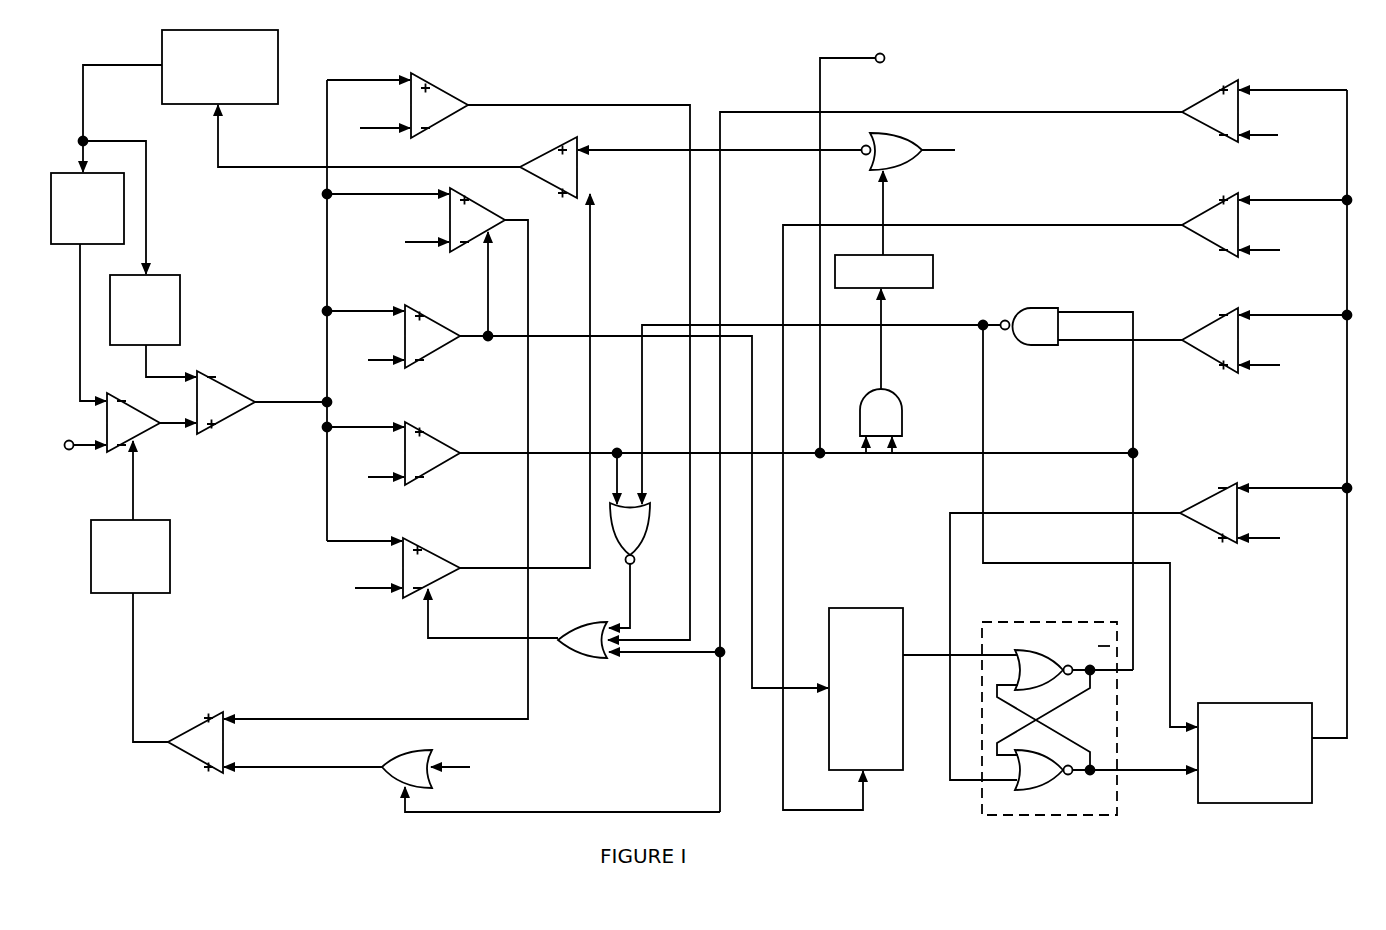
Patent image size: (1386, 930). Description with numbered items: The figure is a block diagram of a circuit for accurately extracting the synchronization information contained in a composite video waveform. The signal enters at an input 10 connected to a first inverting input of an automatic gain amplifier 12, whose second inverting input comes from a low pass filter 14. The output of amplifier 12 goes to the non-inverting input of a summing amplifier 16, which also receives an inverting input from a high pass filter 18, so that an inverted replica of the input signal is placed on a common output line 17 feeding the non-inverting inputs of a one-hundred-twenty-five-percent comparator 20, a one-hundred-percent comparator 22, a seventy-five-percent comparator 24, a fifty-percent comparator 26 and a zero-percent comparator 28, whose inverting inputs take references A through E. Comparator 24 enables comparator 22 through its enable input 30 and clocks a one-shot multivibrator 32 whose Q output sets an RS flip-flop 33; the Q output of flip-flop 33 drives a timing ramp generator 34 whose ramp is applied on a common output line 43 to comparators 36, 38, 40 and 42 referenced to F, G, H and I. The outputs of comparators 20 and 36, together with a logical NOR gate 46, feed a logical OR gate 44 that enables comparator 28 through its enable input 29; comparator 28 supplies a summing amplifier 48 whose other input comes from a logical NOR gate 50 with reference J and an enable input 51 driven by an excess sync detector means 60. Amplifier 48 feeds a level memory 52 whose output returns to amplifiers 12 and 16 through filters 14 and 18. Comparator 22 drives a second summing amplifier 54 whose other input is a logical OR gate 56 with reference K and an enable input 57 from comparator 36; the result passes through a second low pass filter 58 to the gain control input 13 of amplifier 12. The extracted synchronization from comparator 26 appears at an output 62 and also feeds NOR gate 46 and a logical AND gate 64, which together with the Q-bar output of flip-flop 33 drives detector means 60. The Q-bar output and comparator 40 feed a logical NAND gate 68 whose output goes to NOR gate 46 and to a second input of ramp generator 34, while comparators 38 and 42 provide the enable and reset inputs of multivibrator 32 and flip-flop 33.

The input 10 is at (70, 441).
The automatic gain amplifier 12 is at (150, 438).
The control input 13 is at (133, 486).
The low pass filter 14 is at (68, 172).
The summing amplifier 16 is at (228, 382).
The common output line 17 is at (327, 243).
The high pass filter 18 is at (150, 275).
The 125-percent comparator 20 is at (437, 78).
The 100-percent comparator 22 is at (470, 196).
The 75-percent comparator 24 is at (455, 350).
The 50-percent comparator 26 is at (458, 428).
The 0-percent comparator 28 is at (420, 540).
The enable input 29 is at (440, 598).
The enable input 30 is at (487, 272).
The one-shot multivibrator 32 is at (840, 606).
The RS flip-flop 33 is at (990, 622).
The timing ramp generator 34 is at (1240, 702).
The comparator 36 is at (1188, 102).
The comparator 38 is at (1189, 210).
The comparator 40 is at (1190, 328).
The comparator 42 is at (1190, 505).
The common output line 43 is at (1347, 595).
The logical OR gate 44 is at (568, 660).
The logical NOR gate 46 is at (652, 542).
The summing amplifier 48 is at (549, 147).
The logical NOR gate 50 is at (876, 137).
The enable input 51 is at (883, 180).
The level memory 52 is at (278, 64).
The second summing amplifier 54 is at (195, 720).
The logical OR gate 56 is at (385, 753).
The enable input 57 is at (395, 812).
The second low pass filter 58 is at (172, 566).
The excess sync detector means 60 is at (933, 265).
The output 62 is at (884, 58).
The logical AND gate 64 is at (903, 400).
The logical NAND gate 68 is at (1018, 305).